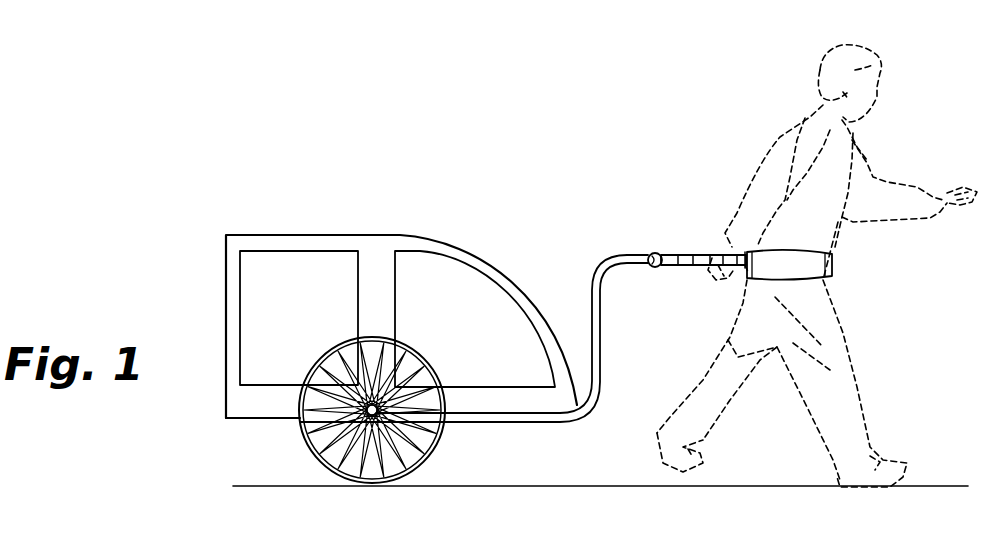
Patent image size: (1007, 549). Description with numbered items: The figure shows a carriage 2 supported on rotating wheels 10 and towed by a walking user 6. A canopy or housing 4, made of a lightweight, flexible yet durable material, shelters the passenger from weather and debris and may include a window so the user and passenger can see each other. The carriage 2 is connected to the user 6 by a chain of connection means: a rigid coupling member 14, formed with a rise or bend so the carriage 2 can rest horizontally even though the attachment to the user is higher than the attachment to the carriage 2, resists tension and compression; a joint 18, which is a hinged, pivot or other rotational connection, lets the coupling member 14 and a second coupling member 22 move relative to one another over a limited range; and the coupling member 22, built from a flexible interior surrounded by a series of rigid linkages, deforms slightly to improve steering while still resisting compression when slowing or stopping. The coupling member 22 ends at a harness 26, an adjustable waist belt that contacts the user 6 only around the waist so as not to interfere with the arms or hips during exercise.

The carriage 2 is at (210, 400).
The housing 4 is at (493, 267).
The user 6 is at (895, 134).
The wheels 10 is at (301, 437).
The coupling member 14 is at (612, 257).
The joint 18 is at (657, 253).
The coupling member 22 is at (677, 266).
The harness 26 is at (832, 266).